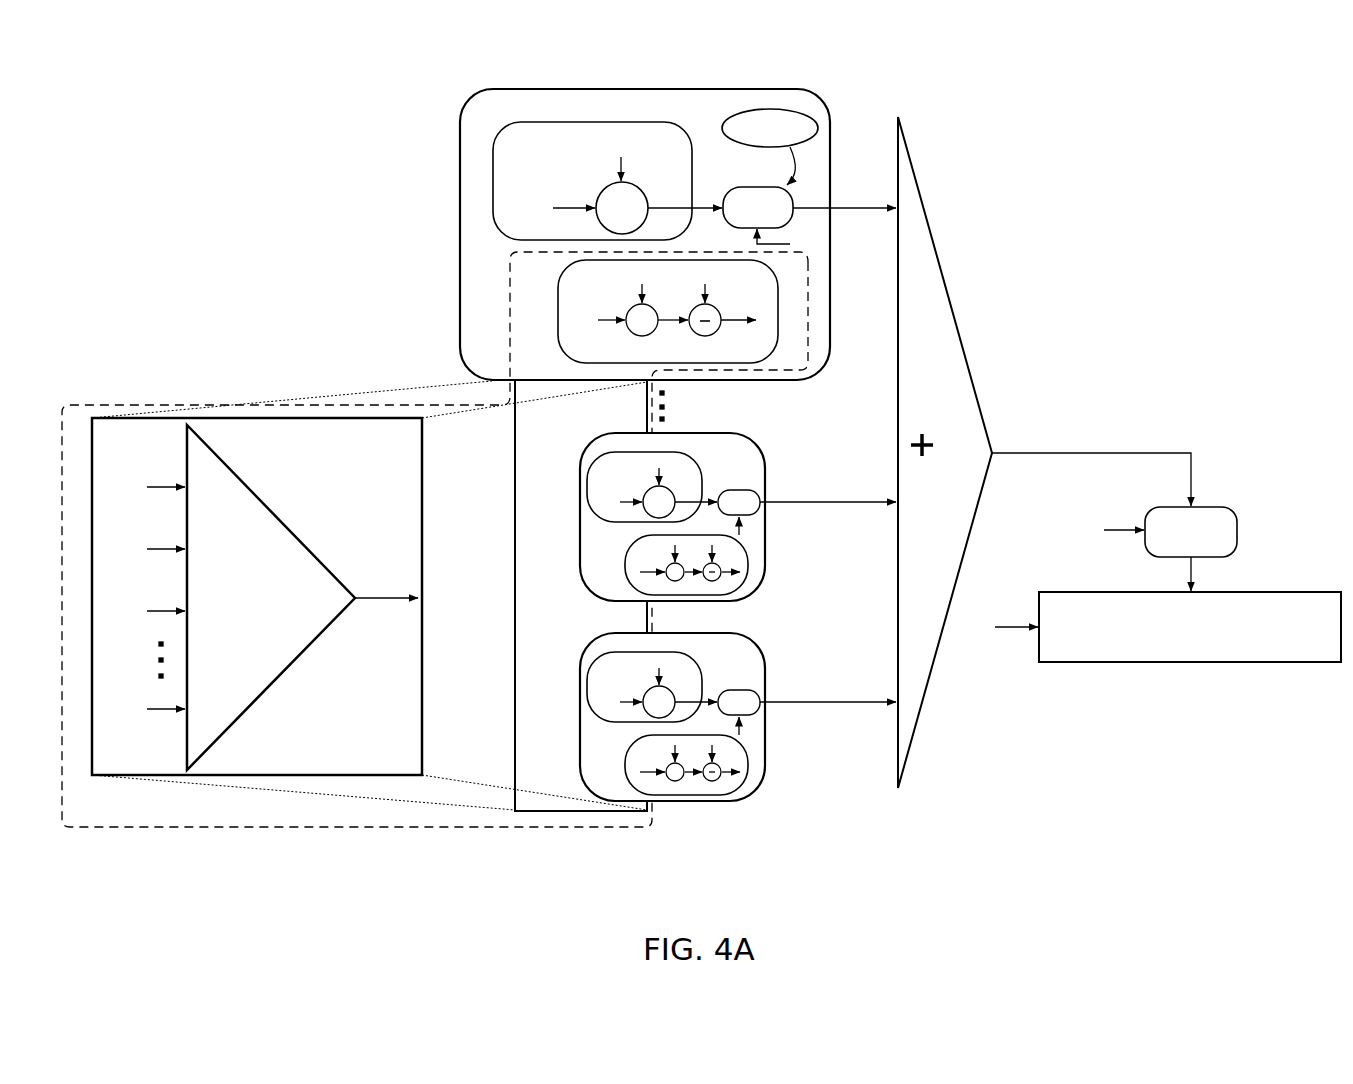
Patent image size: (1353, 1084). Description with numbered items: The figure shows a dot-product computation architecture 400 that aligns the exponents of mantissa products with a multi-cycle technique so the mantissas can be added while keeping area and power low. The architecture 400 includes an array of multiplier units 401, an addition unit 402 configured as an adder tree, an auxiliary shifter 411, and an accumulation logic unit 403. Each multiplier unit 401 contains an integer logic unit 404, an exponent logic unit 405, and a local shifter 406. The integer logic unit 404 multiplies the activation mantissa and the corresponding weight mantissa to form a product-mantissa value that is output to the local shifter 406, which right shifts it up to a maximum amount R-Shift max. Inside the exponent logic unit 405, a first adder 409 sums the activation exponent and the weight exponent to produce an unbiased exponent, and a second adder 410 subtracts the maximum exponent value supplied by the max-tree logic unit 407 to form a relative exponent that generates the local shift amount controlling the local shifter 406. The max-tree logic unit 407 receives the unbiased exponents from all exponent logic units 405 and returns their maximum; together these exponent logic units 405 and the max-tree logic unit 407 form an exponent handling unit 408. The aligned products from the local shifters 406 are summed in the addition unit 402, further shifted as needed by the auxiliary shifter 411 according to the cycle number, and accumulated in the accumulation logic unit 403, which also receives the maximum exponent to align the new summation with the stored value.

The dot-product computation architecture 400 is at (217, 101).
The multiplier unit 401 is at (458, 317).
The addition unit 402 is at (930, 678).
The accumulation logic unit 403 is at (1237, 665).
The integer logic unit 404 is at (683, 137).
The exponent logic unit 405 is at (650, 311).
The local shifter 406 is at (745, 187).
The max-tree logic unit 407 is at (158, 776).
The exponent handling unit 408 is at (510, 284).
The first adder 409 is at (628, 308).
The second adder 410 is at (722, 328).
The auxiliary shifter 411 is at (1238, 531).